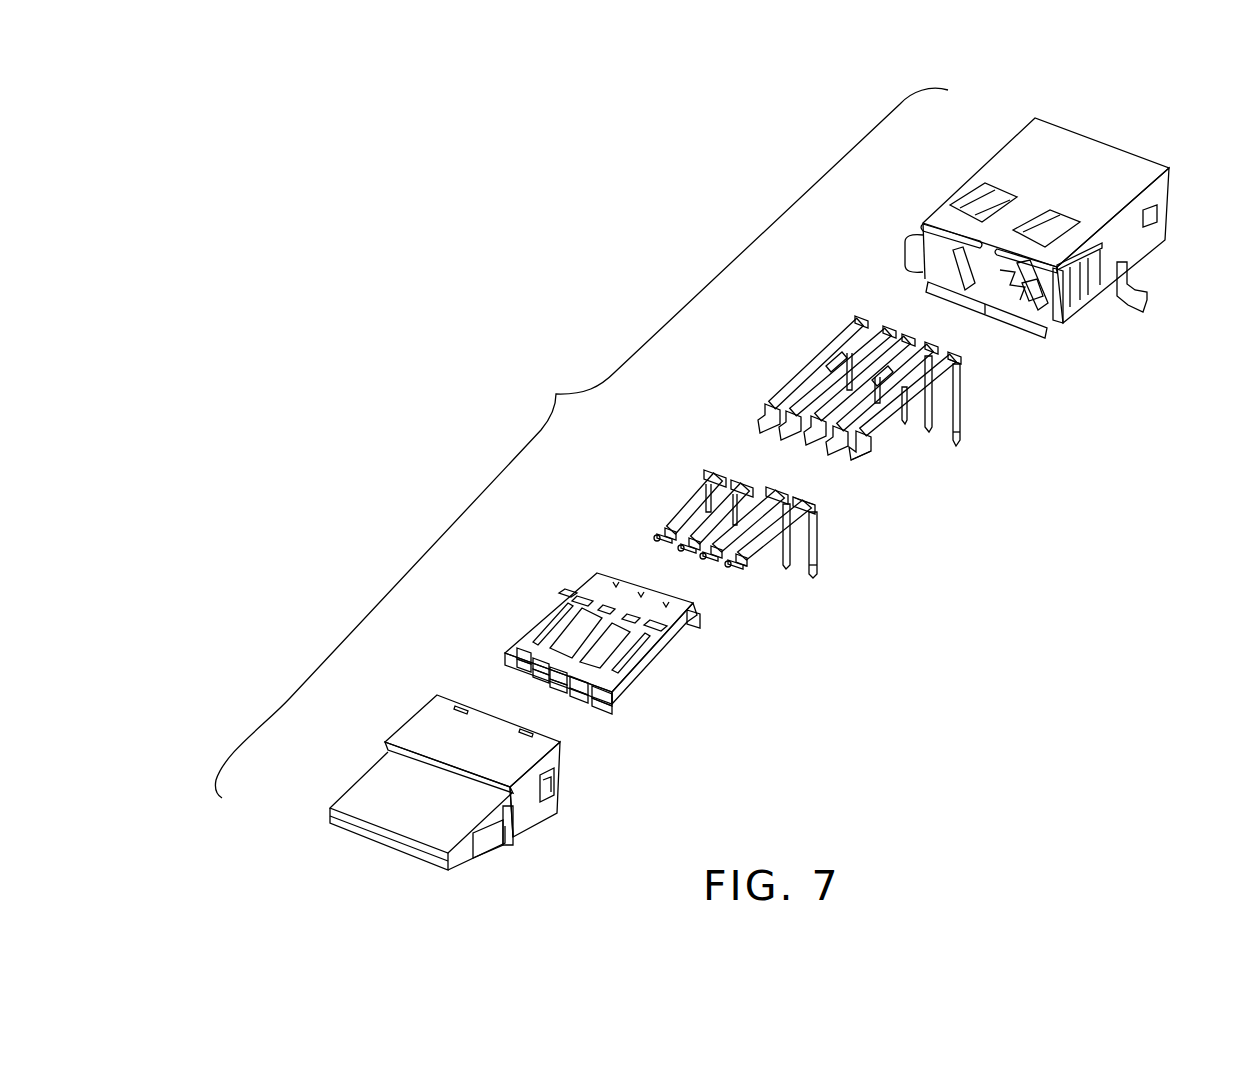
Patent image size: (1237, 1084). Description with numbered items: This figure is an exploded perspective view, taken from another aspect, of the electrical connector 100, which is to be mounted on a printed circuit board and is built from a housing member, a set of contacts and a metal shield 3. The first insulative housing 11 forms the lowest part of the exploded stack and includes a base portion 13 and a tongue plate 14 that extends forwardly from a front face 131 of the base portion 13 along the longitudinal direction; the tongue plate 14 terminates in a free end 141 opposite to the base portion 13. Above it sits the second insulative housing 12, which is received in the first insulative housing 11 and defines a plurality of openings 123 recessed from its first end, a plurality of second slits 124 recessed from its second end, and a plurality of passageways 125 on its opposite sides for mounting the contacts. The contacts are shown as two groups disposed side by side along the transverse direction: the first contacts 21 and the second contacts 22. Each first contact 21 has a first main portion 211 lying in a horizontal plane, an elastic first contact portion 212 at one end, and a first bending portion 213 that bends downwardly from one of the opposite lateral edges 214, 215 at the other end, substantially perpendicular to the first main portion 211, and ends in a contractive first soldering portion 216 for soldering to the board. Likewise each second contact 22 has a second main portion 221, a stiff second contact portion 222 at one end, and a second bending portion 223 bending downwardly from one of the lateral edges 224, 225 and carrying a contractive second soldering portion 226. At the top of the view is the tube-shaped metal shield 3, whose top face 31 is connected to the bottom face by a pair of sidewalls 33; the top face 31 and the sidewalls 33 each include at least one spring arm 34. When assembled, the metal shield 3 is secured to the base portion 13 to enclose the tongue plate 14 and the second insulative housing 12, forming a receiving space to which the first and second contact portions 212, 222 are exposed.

The electrical connector 100 is at (581, 443).
The metal shield 3 is at (938, 183).
The top face 31 is at (1113, 165).
The sidewalls 33 is at (1125, 236).
The spring arm 34 is at (983, 207).
The second contacts 22 is at (791, 370).
The second main portion 221 is at (908, 425).
The second contact portion 222 is at (864, 456).
The second bending portion 223 is at (963, 398).
The lateral edge 224 is at (962, 358).
The lateral edge 225 is at (945, 360).
The second soldering portion 226 is at (960, 433).
The first contacts 21 is at (669, 491).
The first main portion 211 is at (773, 528).
The first contact portion 212 is at (748, 567).
The first bending portion 213 is at (818, 535).
The lateral edge 214 is at (810, 504).
The lateral edge 215 is at (802, 498).
The first soldering portion 216 is at (818, 566).
The second insulative housing 12 is at (519, 612).
The openings 123 is at (523, 673).
The second slits 124 is at (614, 582).
The passageways 125 is at (567, 622).
The first insulative housing 11 is at (361, 723).
The base portion 13 is at (538, 748).
The front face 131 is at (513, 807).
The tongue plate 14 is at (382, 811).
The free end 141 is at (352, 832).